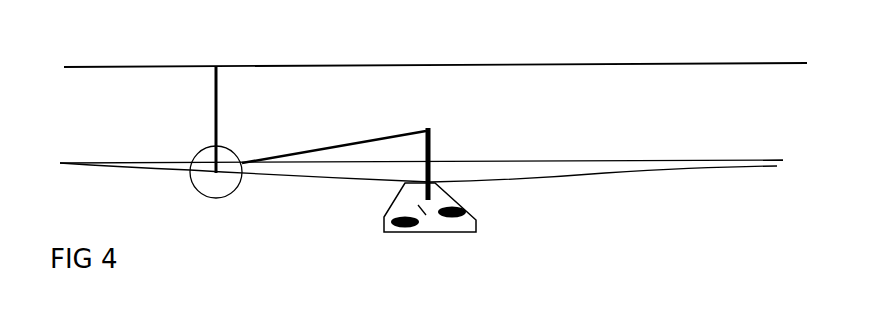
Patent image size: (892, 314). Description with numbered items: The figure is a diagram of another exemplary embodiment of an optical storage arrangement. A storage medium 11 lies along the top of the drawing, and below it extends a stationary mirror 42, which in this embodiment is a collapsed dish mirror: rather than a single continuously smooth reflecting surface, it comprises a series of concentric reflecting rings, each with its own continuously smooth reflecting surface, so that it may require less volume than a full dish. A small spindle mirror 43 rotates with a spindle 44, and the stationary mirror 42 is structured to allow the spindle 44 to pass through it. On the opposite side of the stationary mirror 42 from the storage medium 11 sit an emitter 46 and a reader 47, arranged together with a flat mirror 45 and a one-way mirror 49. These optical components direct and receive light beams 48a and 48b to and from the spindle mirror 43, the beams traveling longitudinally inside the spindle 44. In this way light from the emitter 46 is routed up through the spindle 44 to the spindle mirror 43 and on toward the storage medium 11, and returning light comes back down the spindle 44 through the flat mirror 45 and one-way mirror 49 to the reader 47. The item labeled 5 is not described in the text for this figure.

The storage medium 11 is at (480, 65).
The stationary mirror 42 is at (605, 173).
The float 5 is at (198, 190).
The light beam 48a is at (214, 100).
The light beam 48b is at (218, 100).
The spindle mirror 43 is at (424, 130).
The spindle 44 is at (432, 140).
The reader 47 is at (468, 225).
The emitter 46 is at (396, 231).
The flat mirror 45 is at (430, 231).
The one-way mirror 49 is at (422, 208).